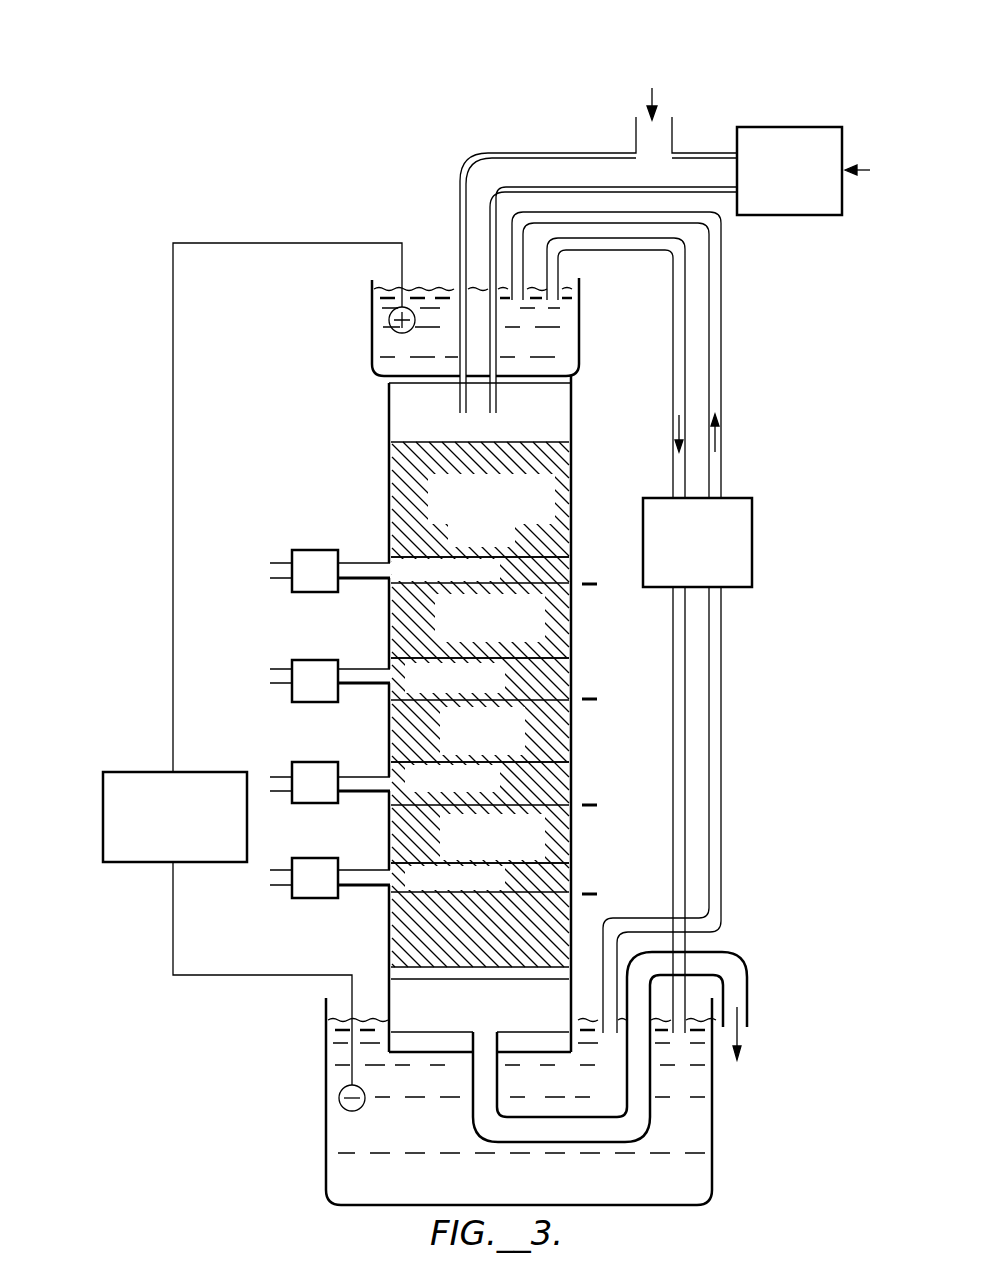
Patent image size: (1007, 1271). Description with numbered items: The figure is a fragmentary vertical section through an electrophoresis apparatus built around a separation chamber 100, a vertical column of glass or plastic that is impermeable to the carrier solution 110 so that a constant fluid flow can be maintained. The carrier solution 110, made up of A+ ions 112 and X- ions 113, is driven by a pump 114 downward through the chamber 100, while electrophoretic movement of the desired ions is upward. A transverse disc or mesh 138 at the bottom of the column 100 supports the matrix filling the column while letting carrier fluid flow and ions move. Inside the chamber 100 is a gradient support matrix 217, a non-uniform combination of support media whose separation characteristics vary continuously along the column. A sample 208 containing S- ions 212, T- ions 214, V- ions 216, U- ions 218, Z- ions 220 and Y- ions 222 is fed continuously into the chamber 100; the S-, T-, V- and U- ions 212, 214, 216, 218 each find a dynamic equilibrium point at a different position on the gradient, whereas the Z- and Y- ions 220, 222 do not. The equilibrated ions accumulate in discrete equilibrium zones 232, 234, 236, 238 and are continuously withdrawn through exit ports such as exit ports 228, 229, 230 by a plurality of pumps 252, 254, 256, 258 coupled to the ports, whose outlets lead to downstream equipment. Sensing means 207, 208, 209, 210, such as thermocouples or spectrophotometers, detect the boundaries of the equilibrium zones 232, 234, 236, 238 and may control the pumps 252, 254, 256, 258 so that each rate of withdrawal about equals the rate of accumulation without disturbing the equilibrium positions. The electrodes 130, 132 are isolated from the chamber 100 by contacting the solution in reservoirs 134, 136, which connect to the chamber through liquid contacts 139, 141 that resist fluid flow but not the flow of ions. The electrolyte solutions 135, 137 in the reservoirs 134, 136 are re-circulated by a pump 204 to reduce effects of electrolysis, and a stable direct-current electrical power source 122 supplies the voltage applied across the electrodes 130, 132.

The separation chamber 100 is at (575, 472).
The carrier solution 110 is at (678, 148).
The A+ ions 112 is at (515, 162).
The X- ions 113 is at (595, 160).
The pump 114 is at (815, 127).
The electrical power source 122 is at (213, 772).
The electrode 130 is at (389, 319).
The electrode 132 is at (339, 1098).
The reservoir 134 is at (568, 354).
The electrolyte solution 135 is at (575, 328).
The reservoir 136 is at (343, 1173).
The electrolyte solution 137 is at (697, 1130).
The transverse disc or mesh 138 is at (408, 967).
The liquid contact 139 is at (445, 1042).
The liquid contact 141 is at (400, 380).
The pump 204 is at (745, 498).
The sensing means 207 is at (590, 586).
The sample 208 is at (594, 700).
The sensing means 209 is at (594, 806).
The sensing means 210 is at (594, 895).
The S- ions 212 is at (466, 573).
The T- ions 214 is at (466, 681).
The V- ions 216 is at (466, 781).
The gradient support matrix 217 is at (418, 486).
The U- ions 218 is at (466, 881).
The Z- ions 220 is at (549, 1008).
The Y- ions 222 is at (388, 565).
The exit port 228 is at (388, 670).
The exit port 229 is at (388, 778).
The exit port 230 is at (388, 872).
The equilibrium zone 232 is at (574, 571).
The equilibrium zone 234 is at (574, 680).
The equilibrium zone 236 is at (574, 779).
The equilibrium zone 238 is at (574, 878).
The pump 252 is at (300, 550).
The pump 254 is at (298, 660).
The pump 256 is at (298, 762).
The pump 258 is at (305, 858).